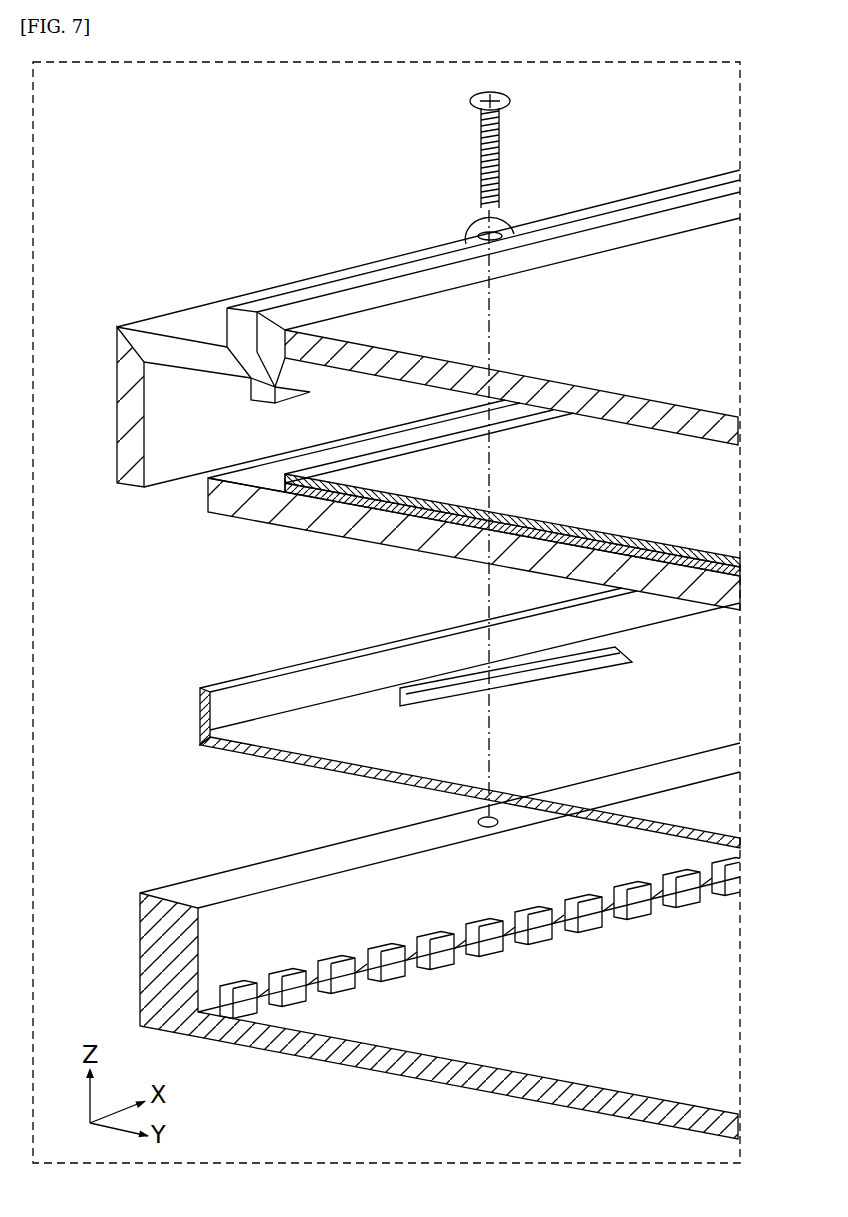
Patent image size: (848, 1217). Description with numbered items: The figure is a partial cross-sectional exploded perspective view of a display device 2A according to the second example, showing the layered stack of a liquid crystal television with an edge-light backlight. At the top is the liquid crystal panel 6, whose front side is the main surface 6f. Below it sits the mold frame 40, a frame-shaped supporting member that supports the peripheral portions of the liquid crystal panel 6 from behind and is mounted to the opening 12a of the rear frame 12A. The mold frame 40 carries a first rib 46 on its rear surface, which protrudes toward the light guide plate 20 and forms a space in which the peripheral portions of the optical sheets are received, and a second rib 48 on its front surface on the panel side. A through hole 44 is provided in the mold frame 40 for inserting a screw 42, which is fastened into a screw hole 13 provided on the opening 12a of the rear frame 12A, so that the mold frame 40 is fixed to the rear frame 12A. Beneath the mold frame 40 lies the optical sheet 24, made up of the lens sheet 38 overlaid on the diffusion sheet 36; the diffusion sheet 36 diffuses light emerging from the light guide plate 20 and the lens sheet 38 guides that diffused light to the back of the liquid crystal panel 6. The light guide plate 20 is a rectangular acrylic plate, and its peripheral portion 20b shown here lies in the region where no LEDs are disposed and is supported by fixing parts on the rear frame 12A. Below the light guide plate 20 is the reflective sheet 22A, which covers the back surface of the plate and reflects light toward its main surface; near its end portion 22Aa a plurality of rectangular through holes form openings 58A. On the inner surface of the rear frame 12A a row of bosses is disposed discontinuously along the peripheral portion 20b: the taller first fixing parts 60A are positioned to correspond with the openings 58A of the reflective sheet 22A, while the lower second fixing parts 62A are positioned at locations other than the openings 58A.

The display device 2A is at (195, 152).
The liquid crystal panel 6 is at (718, 312).
The main surface 6f is at (720, 358).
The mold frame 40 is at (128, 350).
The first rib 46 is at (248, 384).
The second rib 48 is at (297, 284).
The screw 42 is at (505, 138).
The through hole 44 is at (506, 229).
The light guide plate 20 is at (312, 519).
The peripheral portion 20b is at (238, 503).
The lens sheet 38 is at (718, 553).
The diffusion sheet 36 is at (740, 582).
The optical sheet 24 is at (808, 518).
The reflective sheet 22A is at (270, 738).
The end portion 22Aa is at (242, 697).
The opening 58A is at (443, 682).
The screw hole 13 is at (478, 820).
The opening 12a is at (192, 892).
The rear frame 12A is at (507, 1055).
The second fixing part 62A is at (386, 968).
The first fixing part 60A is at (613, 936).